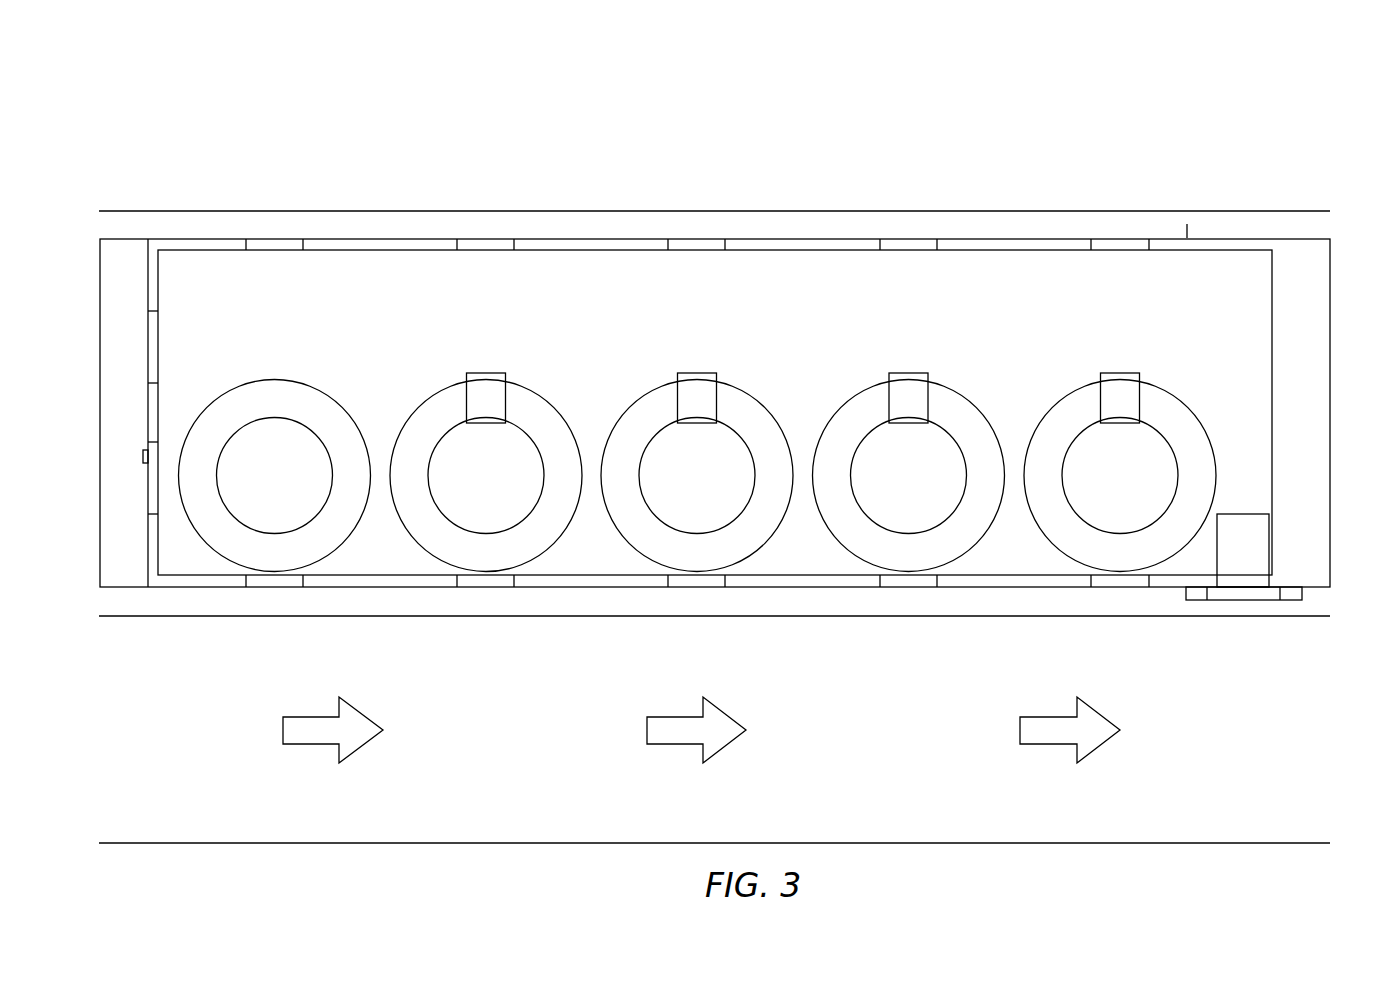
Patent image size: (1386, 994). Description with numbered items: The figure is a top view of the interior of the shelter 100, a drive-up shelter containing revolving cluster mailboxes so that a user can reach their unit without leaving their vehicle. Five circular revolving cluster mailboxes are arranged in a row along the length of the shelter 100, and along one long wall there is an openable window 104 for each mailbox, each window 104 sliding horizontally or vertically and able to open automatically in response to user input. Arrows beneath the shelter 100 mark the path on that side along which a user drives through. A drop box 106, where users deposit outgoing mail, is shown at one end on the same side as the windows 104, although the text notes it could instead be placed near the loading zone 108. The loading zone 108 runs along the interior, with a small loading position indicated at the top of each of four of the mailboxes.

The shelter 100 is at (328, 228).
The openable window 104 is at (698, 527).
The drop box 106 is at (1266, 600).
The loading zone 108 is at (788, 324).